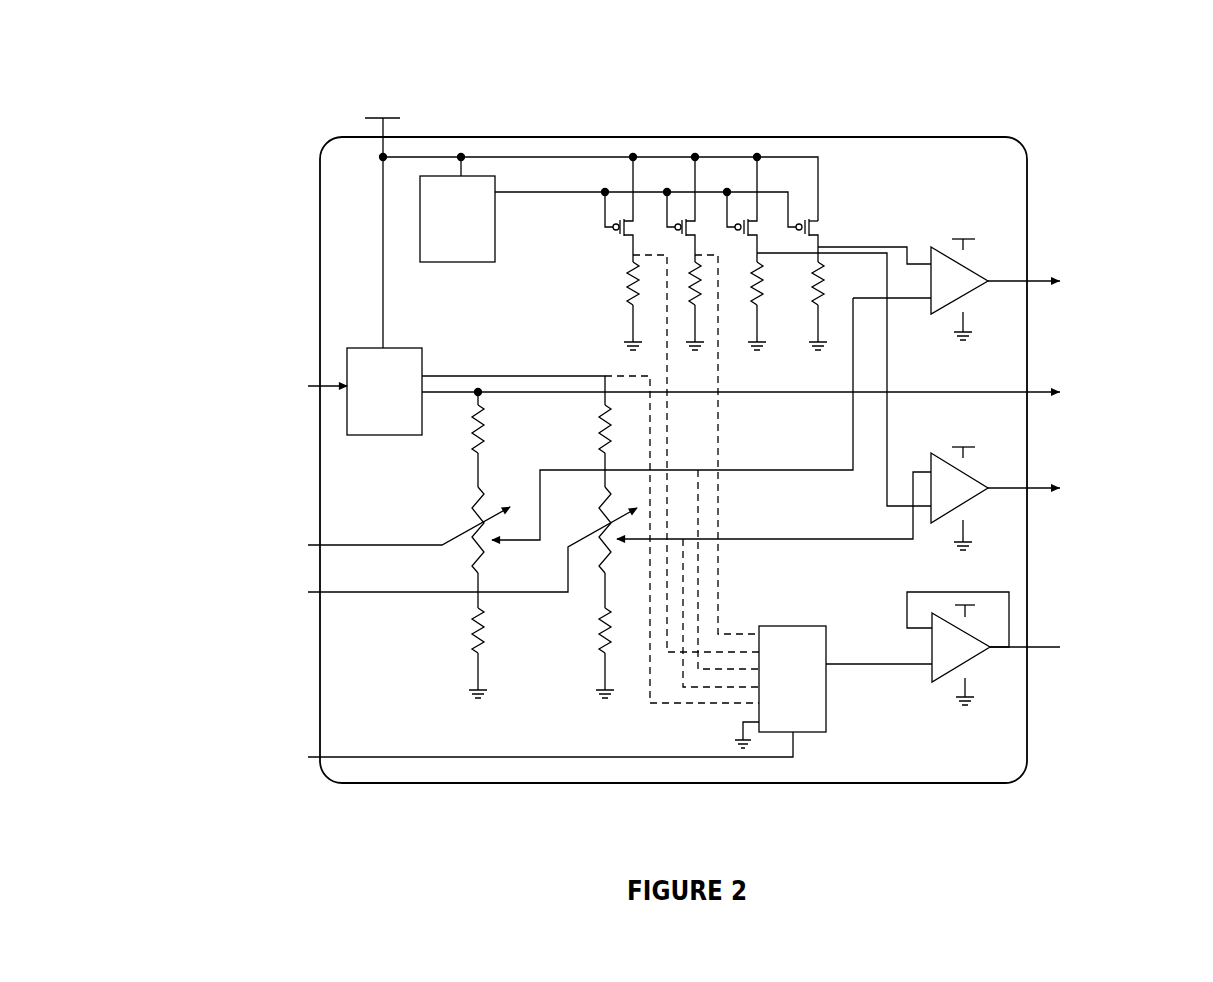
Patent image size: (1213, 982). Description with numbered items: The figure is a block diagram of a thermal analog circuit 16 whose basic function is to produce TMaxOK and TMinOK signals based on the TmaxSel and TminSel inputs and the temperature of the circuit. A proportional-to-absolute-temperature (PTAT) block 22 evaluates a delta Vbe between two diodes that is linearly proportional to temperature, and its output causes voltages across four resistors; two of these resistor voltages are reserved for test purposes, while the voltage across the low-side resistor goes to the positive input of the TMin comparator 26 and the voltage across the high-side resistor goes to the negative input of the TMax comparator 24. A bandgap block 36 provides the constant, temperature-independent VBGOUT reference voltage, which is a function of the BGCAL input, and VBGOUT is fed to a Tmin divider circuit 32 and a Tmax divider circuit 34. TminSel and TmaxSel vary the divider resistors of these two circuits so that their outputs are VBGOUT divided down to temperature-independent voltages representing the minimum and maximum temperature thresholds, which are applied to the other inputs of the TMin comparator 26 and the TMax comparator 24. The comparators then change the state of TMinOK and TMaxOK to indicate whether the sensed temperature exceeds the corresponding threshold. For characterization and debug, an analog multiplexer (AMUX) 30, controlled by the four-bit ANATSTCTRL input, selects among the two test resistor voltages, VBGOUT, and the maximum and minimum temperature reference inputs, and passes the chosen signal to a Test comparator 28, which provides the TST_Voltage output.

The thermal analog circuit 16 is at (977, 134).
The proportional-to-absolute-temperature (PTAT) block 22 is at (460, 265).
The TMax comparator 24 is at (977, 263).
The TMin comparator 26 is at (977, 499).
The Test comparator 28 is at (980, 657).
The analog multiplexer (AMUX) 30 is at (809, 736).
The Tmin divider circuit 32 is at (612, 716).
The Tmax divider circuit 34 is at (446, 615).
The bandgap block 36 is at (356, 345).